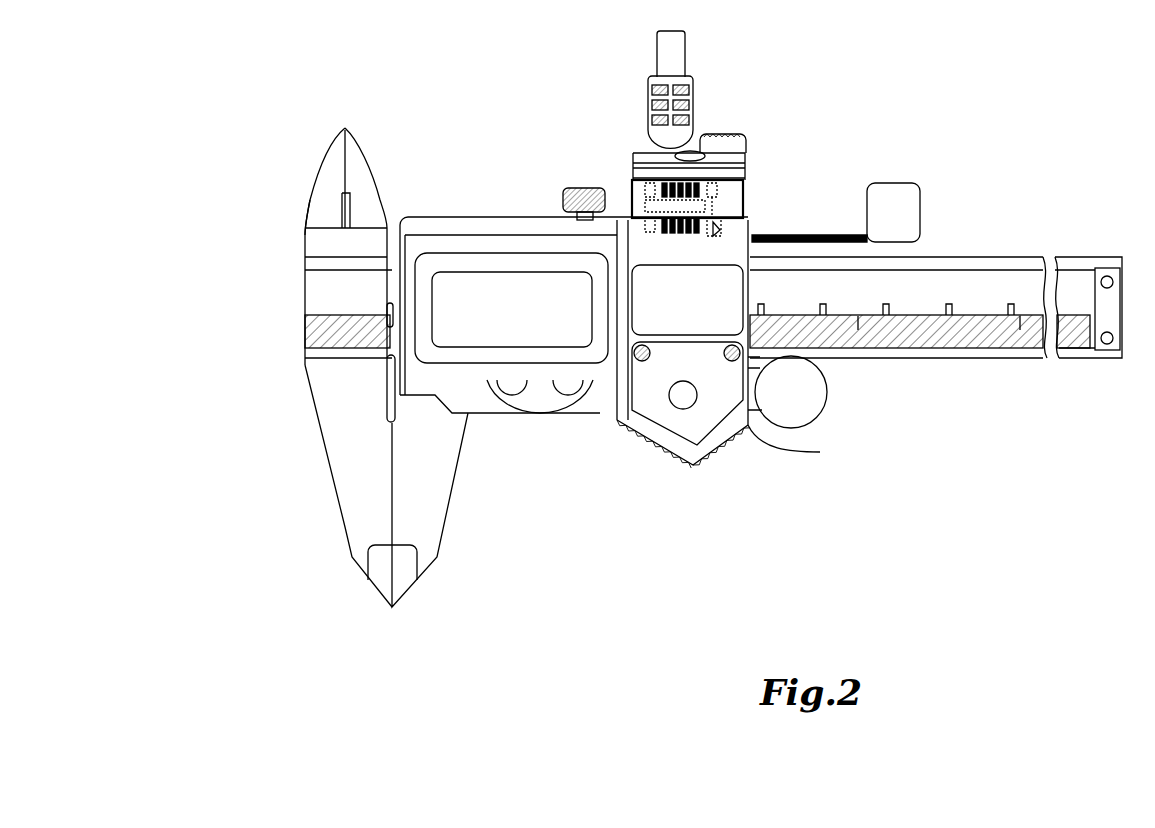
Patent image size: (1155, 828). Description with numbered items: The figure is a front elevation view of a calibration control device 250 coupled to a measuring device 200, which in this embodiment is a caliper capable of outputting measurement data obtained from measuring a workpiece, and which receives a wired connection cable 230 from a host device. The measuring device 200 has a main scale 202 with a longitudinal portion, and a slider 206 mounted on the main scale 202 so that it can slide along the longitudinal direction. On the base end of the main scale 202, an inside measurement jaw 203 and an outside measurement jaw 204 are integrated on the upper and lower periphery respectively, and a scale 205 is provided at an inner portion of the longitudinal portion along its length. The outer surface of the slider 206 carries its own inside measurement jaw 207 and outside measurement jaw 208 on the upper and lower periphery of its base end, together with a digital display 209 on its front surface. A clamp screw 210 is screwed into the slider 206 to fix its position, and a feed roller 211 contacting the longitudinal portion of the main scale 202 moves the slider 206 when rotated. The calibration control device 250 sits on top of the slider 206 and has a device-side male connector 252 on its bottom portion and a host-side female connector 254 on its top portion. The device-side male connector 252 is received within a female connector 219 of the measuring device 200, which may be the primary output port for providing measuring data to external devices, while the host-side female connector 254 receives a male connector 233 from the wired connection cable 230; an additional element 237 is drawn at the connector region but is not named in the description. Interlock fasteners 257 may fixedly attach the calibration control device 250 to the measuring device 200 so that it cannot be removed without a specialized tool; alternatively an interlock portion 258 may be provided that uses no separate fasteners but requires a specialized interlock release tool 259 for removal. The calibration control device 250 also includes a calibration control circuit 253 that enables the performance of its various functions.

The measuring device 200 is at (1020, 225).
The main scale 202 is at (938, 358).
The inside measurement jaw 203 is at (355, 143).
The outside measurement jaw 204 is at (348, 525).
The scale 205 is at (912, 284).
The slider 206 is at (818, 452).
The inside measurement jaw 207 is at (326, 152).
The outside measurement jaw 208 is at (430, 553).
The digital display 209 is at (492, 285).
The clamp screw 210 is at (576, 188).
The feed roller 211 is at (829, 405).
The female connector 219 is at (753, 235).
The wired connection cable 230 is at (672, 57).
The male connector 233 is at (650, 183).
The connector contacts 237 is at (664, 186).
The calibration control device 250 is at (650, 205).
The device-side male connector 252 is at (660, 236).
The calibration control circuit 253 is at (712, 212).
The host-side female connector 254 is at (745, 180).
The interlock fasteners 257 is at (645, 232).
The interlock portion 258 is at (745, 222).
The interlock release tool 259 is at (897, 183).